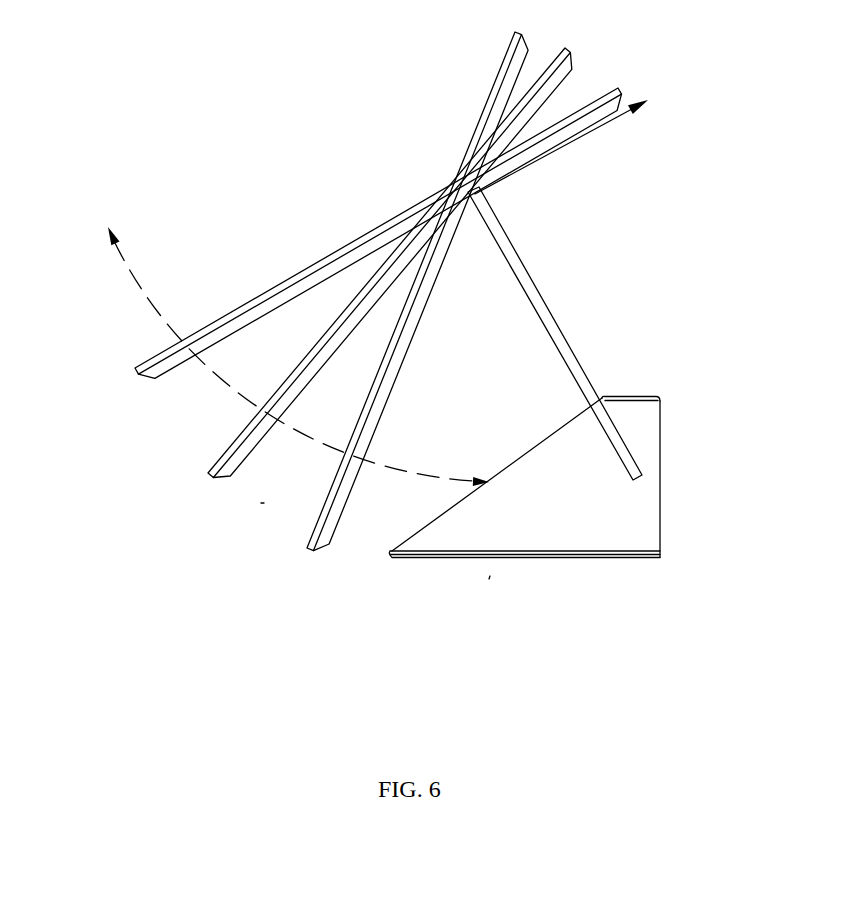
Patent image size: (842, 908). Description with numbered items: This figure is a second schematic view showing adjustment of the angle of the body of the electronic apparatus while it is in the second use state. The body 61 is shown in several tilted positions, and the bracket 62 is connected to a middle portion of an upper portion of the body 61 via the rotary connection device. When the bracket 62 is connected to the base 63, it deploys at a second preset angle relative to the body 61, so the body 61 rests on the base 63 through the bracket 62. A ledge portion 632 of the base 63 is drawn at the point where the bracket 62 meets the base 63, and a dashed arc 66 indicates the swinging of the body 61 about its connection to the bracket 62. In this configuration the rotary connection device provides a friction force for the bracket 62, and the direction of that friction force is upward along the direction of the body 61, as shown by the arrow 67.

The body 61 is at (378, 232).
The bracket 62 is at (540, 322).
The base 63 is at (627, 517).
The stop ledge of base 632 is at (605, 398).
The rotation direction of swing bar 66 is at (260, 405).
The arrow 67 is at (550, 157).